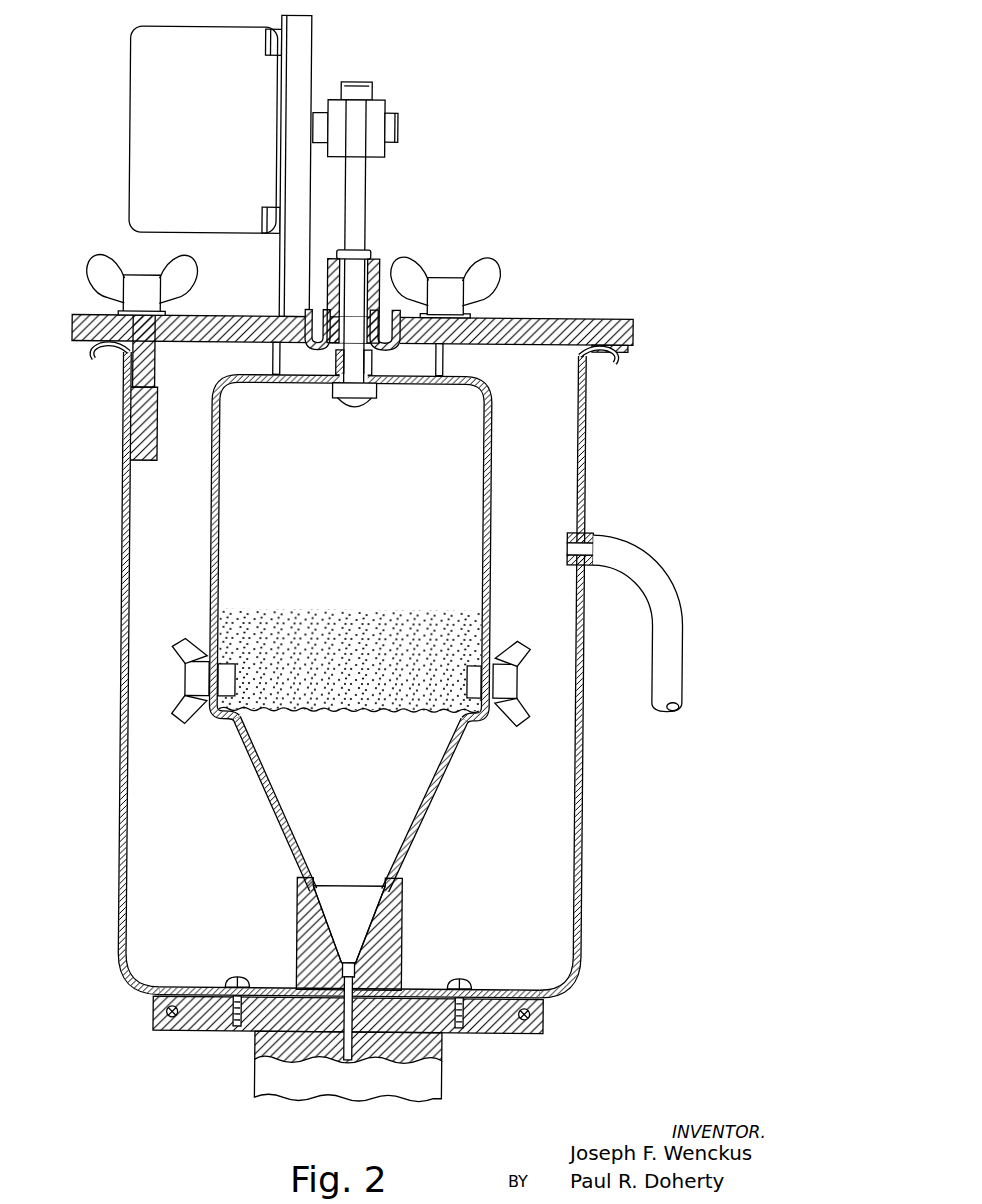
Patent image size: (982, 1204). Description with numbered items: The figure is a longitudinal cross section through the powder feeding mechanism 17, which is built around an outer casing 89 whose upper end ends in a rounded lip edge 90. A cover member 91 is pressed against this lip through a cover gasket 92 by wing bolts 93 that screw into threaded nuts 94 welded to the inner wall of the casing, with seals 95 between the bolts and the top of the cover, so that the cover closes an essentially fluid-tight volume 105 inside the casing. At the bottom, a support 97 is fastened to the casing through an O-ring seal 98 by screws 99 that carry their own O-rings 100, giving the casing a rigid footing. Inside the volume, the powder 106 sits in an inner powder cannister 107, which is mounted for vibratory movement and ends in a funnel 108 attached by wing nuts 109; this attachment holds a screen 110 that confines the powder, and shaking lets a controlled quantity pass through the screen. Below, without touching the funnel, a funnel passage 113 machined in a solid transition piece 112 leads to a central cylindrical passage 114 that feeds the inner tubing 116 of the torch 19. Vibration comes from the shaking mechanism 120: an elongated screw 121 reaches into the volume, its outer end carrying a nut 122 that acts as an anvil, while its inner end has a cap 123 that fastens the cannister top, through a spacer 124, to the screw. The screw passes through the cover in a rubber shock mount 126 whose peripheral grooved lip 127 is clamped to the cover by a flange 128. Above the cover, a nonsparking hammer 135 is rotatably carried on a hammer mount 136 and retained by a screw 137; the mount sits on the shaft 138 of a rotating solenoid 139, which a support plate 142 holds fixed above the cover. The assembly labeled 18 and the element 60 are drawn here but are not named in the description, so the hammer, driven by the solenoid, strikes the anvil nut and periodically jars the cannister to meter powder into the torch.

The powder feeding mechanism 17 is at (120, 600).
The motor assembly 18 is at (171, 129).
The torch 19 is at (454, 1064).
The outlet tube 60 is at (642, 556).
The outer casing 89 is at (589, 454).
The rounded lip edge 90 is at (598, 350).
The cover member 91 is at (585, 318).
The cover gasket 92 is at (612, 343).
The wing bolts 93 is at (99, 276).
The threaded nuts 94 is at (141, 430).
The seals 95 is at (165, 313).
The support 97 is at (541, 1026).
The O-ring seal 98 is at (551, 995).
The screws 99 is at (473, 980).
The O-rings 100 is at (236, 983).
The volume 105 is at (383, 566).
The powder 106 is at (357, 613).
The inner powder cannister 107 is at (222, 524).
The funnel 108 is at (264, 764).
The wing nuts 109 is at (178, 710).
The screen 110 is at (363, 710).
The solid transition piece 112 is at (388, 930).
The funnel passage 113 is at (383, 896).
The central cylindrical passage 114 is at (364, 971).
The inner tubing 116 is at (376, 1061).
The shaking mechanism 120 is at (385, 248).
The elongated screw 121 is at (351, 266).
The nut 122 is at (342, 250).
The cap 123 is at (360, 400).
The spacer 124 is at (337, 358).
The rubber shock mount 126 is at (374, 263).
The grooved lip 127 is at (430, 284).
The flange 128 is at (476, 277).
The nonsparking hammer 135 is at (353, 193).
The hammer mount 136 is at (373, 146).
The screw 137 is at (356, 90).
The shaft 138 is at (318, 116).
The rotating solenoid 139 is at (218, 131).
The support plate 142 is at (297, 36).